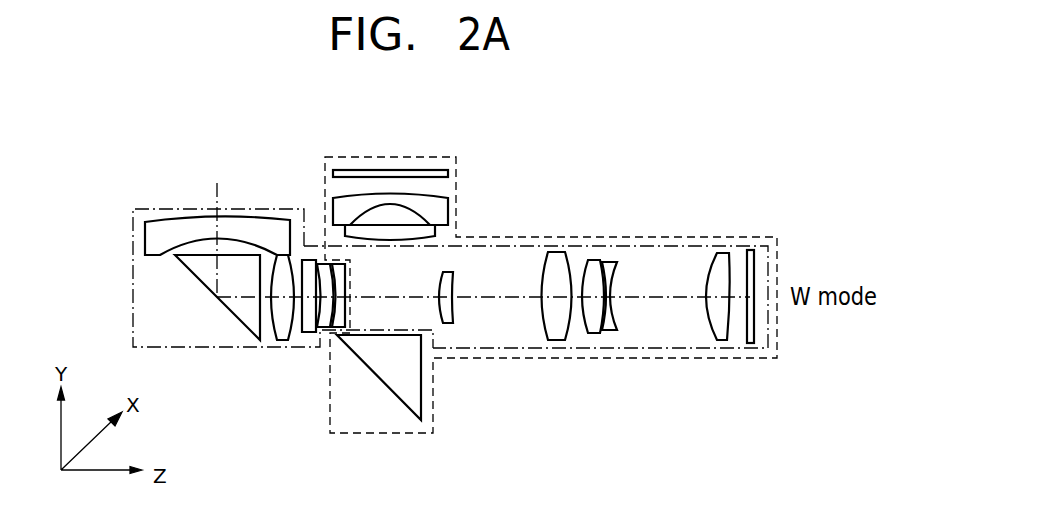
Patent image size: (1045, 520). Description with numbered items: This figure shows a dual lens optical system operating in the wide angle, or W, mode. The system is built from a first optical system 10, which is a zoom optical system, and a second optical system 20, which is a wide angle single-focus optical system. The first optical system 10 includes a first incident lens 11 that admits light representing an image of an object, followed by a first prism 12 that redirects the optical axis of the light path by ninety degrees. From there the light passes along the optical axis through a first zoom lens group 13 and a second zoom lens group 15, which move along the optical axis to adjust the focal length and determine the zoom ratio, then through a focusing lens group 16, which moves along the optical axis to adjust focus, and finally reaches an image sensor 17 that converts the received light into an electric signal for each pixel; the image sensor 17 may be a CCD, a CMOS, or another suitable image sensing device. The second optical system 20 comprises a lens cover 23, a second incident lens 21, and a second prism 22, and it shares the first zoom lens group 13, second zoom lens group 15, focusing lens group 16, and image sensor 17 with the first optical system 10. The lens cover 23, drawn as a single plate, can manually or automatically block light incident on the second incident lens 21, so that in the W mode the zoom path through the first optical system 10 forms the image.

The first optical system 10 is at (133, 263).
The first incident lens 11 is at (170, 222).
The first prism 12 is at (228, 315).
The first zoom lens group 13 is at (300, 340).
The second zoom lens group 15 is at (557, 342).
The focusing lens group 16 is at (710, 336).
The image sensor 17 is at (749, 344).
The second optical system 20 is at (581, 236).
The second incident lens 21 is at (446, 203).
The second prism 22 is at (390, 382).
The lens cover 23 is at (387, 170).